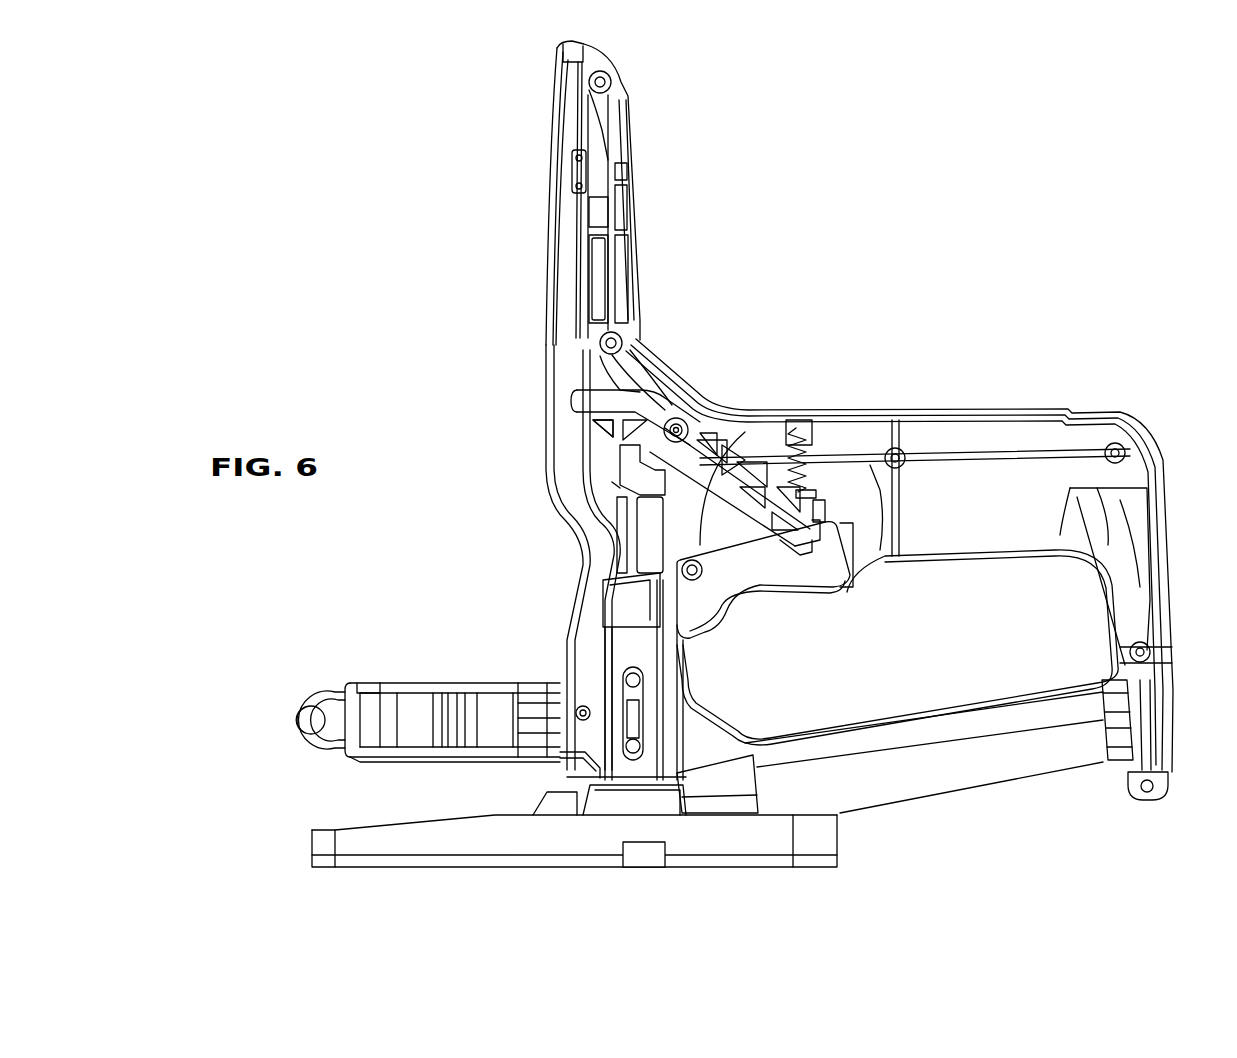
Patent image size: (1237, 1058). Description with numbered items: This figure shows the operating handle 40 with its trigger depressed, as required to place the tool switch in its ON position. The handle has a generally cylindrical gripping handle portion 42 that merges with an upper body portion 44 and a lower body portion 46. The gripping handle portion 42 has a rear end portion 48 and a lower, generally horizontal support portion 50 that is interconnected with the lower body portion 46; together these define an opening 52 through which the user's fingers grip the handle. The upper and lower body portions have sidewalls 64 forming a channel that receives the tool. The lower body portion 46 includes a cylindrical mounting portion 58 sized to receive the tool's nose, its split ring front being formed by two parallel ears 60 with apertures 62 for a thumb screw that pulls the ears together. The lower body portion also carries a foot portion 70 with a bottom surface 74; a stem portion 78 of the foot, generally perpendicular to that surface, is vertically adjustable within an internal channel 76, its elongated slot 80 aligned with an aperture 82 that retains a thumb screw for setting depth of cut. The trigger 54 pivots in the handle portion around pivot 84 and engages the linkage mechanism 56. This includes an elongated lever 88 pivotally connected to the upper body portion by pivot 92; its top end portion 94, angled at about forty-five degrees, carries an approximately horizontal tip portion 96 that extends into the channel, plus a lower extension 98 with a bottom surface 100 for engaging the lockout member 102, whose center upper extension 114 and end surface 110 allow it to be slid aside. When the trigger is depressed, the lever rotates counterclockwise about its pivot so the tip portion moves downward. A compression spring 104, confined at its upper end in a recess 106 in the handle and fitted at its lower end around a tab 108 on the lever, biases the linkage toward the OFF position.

The operating handle 40 is at (992, 248).
The gripping handle portion 42 is at (923, 557).
The upper body portion 44 is at (640, 264).
The lower body portion 46 is at (609, 694).
The rear end portion 48 is at (1143, 586).
The lower support portion 50 is at (1013, 757).
The opening 52 is at (1028, 632).
The trigger 54 is at (800, 558).
The linkage mechanism 56 is at (712, 385).
The cylindrical mounting portion 58 is at (418, 722).
The ears 60 is at (337, 702).
The apertures 62 is at (291, 708).
The sidewalls 64 is at (573, 478).
The foot portion 70 is at (549, 836).
The bottom surface 74 is at (590, 868).
The internal channel 76 is at (597, 765).
The stem portion 78 is at (628, 651).
The elongated slot 80 is at (643, 692).
The aperture 82 is at (677, 705).
The pivot 84 is at (704, 569).
The lever 88 is at (760, 436).
The pivot 92 is at (679, 419).
The top end portion 94 is at (622, 398).
The tip portion 96 is at (572, 402).
The lower extension 98 is at (608, 433).
The bottom surface 100 is at (622, 467).
The lockout member 102 is at (625, 458).
The compression spring 104 is at (846, 447).
The recess 106 is at (796, 433).
The tab 108 is at (812, 487).
The end surface 110 is at (652, 546).
The center upper extension 114 is at (612, 492).